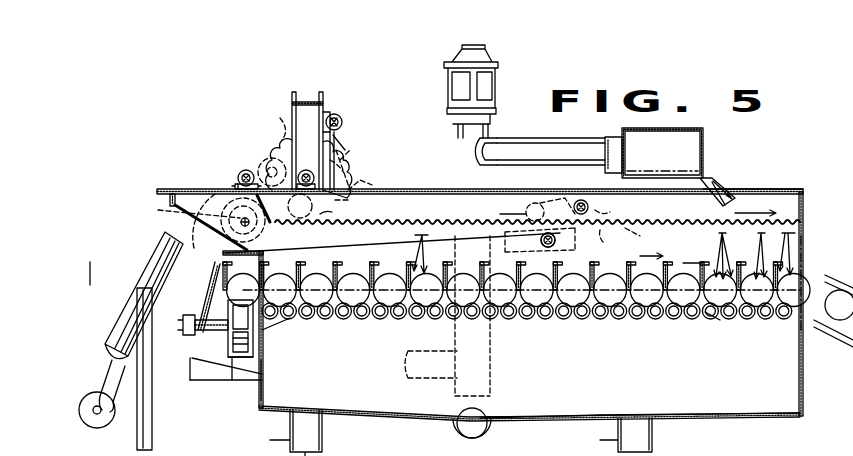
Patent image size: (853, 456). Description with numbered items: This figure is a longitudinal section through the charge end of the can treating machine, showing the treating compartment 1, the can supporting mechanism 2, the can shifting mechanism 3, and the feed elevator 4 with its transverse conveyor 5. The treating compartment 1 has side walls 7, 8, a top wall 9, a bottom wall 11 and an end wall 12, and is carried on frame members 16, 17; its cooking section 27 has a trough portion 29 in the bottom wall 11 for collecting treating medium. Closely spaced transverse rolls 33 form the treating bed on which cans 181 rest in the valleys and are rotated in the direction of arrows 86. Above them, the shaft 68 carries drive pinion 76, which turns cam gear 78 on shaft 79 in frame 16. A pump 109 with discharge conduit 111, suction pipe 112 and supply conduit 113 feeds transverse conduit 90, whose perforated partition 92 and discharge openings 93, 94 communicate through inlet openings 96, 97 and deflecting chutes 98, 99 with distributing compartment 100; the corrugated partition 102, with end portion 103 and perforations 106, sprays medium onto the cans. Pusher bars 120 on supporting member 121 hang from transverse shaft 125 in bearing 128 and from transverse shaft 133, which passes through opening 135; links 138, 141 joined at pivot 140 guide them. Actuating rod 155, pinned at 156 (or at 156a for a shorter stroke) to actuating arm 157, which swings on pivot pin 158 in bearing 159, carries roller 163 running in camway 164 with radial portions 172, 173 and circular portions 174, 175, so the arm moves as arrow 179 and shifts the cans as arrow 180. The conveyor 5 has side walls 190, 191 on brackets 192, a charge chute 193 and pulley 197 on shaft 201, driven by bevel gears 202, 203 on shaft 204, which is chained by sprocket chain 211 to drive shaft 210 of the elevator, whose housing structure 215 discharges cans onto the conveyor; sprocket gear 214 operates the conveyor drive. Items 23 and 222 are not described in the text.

The treating compartment 1 is at (790, 349).
The can supporting mechanism 2 is at (718, 332).
The can shifting mechanism 3 is at (364, 163).
The feed elevator 4 is at (149, 255).
The transverse conveyor 5 is at (240, 358).
The side wall 7 is at (386, 70).
The side wall 8 is at (108, 288).
The top wall 9 is at (790, 192).
The bottom wall 11 is at (758, 418).
The end wall 12 is at (263, 376).
The frame member 16 is at (298, 100).
The frame member 17 is at (655, 438).
The adjacent unit 23 is at (833, 349).
The cooking section 27 is at (693, 256).
The trough portion 29 is at (540, 418).
The rolls 33 is at (394, 320).
The shaft 68 is at (246, 170).
The drive pinion 76 is at (234, 182).
The cam gear 78 is at (352, 180).
The shaft 79 is at (307, 163).
The arrows 86 is at (536, 274).
The transverse conduit 90 is at (705, 140).
The perforated partition 92 is at (678, 164).
The discharge opening 93 is at (603, 178).
The discharge opening 94 is at (710, 176).
The inlet opening 96 is at (588, 202).
The inlet opening 97 is at (730, 190).
The deflecting chute 98 is at (612, 208).
The deflecting chute 99 is at (712, 200).
The treating medium distributing compartment 100 is at (513, 207).
The corrugated sheet metal partition 102 is at (430, 222).
The end portion 103 is at (222, 222).
The perforations 106 is at (585, 232).
The pump 109 is at (492, 140).
The discharge conduit 111 is at (542, 140).
The suction pipe 112 is at (492, 362).
The supply conduit 113 is at (442, 380).
The pusher bars 120 is at (733, 262).
The supporting member 121 is at (798, 256).
The transverse shaft 125 is at (634, 239).
The bearing 128 is at (472, 423).
The transverse shaft 133 is at (550, 247).
The opening 135 is at (606, 242).
The link 138 is at (555, 196).
The pivot 140 is at (532, 203).
The link 141 is at (558, 240).
The actuating rod 155 is at (470, 250).
The pivot pin 156 is at (278, 245).
The connection point 156a is at (290, 262).
The actuating arm 157 is at (348, 142).
The pivot pin 158 is at (340, 118).
The bearing 159 is at (328, 100).
The roller 163 is at (373, 184).
The camway 164 is at (278, 138).
The radially extending portion 172 is at (284, 118).
The radially extending portion 173 is at (356, 204).
The circular cam portion 174 is at (298, 206).
The circular cam portion 175 is at (355, 148).
The arrow 179 is at (334, 217).
The arrow 180 is at (648, 250).
The cans 181 is at (508, 270).
The side wall 190 is at (255, 344).
The side wall 191 is at (232, 362).
The bracket 192 is at (248, 382).
The charge chute 193 is at (290, 318).
The conveyor belt pulley 197 is at (245, 316).
The shaft 201 is at (215, 348).
The bevel gear 202 is at (192, 336).
The bevel gear 203 is at (212, 297).
The shaft 204 is at (210, 332).
The drive shaft 210 is at (186, 211).
The sprocket chain 211 is at (205, 292).
The sprocket gear 214 is at (212, 190).
The housing structure 215 is at (106, 380).
The wheel 222 is at (118, 416).